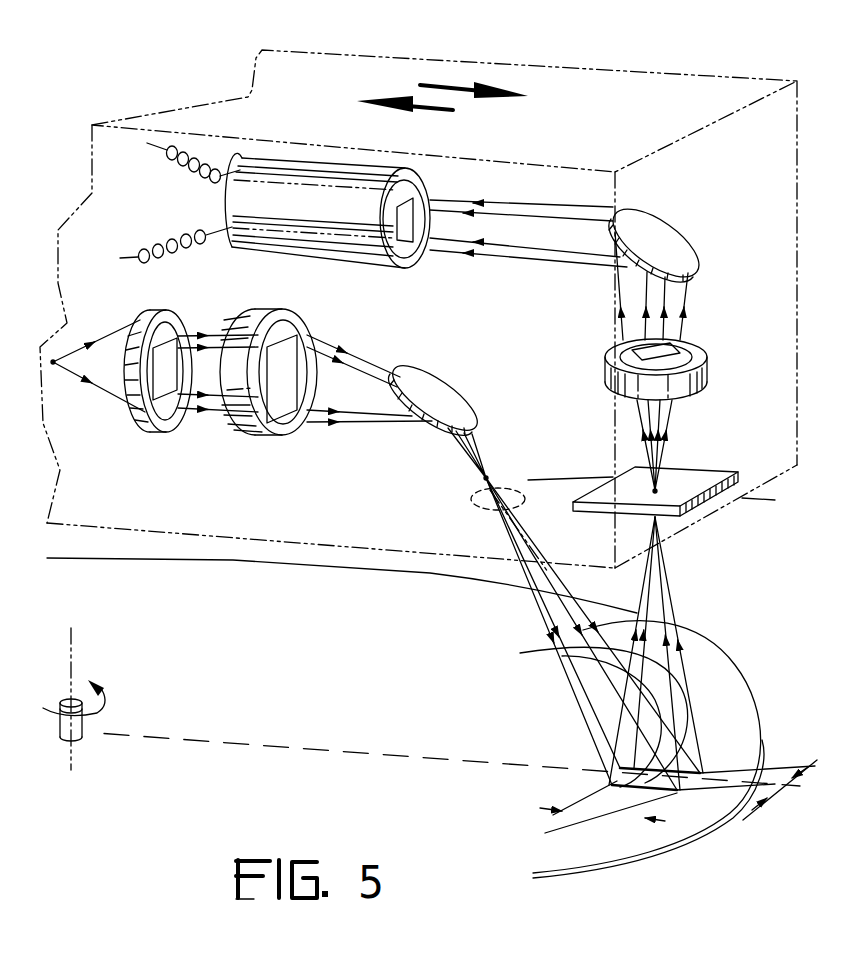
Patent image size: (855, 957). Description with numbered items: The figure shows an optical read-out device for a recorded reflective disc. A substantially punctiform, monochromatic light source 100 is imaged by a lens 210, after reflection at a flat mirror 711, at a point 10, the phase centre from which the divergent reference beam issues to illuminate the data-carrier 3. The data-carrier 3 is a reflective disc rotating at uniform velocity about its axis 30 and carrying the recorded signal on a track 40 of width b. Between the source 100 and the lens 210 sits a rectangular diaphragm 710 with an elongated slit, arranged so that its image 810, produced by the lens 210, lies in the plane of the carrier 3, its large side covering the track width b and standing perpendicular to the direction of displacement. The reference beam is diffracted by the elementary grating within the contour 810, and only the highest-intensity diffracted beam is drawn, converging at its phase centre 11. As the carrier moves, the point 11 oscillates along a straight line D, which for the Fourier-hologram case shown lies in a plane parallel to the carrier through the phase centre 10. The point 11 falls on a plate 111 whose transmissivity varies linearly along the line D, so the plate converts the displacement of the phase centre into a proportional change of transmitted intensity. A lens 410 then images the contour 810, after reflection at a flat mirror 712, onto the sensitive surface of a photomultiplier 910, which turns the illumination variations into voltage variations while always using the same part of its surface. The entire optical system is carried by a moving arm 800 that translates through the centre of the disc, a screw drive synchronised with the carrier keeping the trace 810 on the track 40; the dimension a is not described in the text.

The moving arm 800 is at (731, 82).
The photomultiplier 910 is at (331, 238).
The flat mirror 712 is at (690, 253).
The lens 410 is at (704, 342).
The plate of variable transparency 111 is at (720, 478).
The phase centre of the diffracted beam 11 is at (656, 490).
The straight line D is at (662, 497).
The light source 100 is at (53, 366).
The rectangular diaphragm 710 is at (162, 406).
The lens 210 is at (282, 427).
The flat mirror 711 is at (463, 397).
The phase centre of the reference beam 10 is at (484, 474).
The data-carrier 3 is at (722, 661).
The track 40 is at (543, 806).
The image of the slit 810 is at (667, 792).
The track width a is at (780, 790).
The width of the track b is at (602, 808).
The axis 30 is at (82, 722).